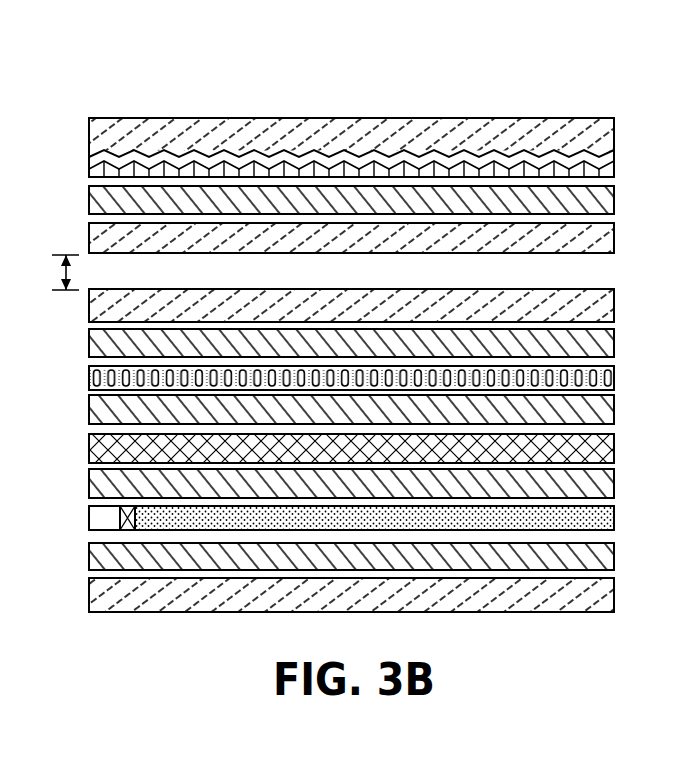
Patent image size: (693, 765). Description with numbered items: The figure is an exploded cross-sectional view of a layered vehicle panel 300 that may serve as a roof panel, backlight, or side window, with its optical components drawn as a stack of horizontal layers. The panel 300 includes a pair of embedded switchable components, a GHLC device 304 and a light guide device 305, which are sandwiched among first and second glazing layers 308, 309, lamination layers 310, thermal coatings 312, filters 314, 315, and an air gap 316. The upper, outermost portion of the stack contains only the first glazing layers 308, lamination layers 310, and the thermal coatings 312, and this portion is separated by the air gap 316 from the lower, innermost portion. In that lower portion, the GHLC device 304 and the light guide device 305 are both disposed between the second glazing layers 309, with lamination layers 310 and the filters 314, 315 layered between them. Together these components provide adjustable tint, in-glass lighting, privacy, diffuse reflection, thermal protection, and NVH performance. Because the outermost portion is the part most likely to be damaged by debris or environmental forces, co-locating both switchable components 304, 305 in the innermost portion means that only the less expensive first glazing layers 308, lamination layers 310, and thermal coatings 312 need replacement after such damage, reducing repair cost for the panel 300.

The panel 300 is at (100, 93).
The GHLC device 304 is at (614, 372).
The light guide device 305 is at (360, 525).
The first glazing layers 308 is at (614, 139).
The second glazing layers 309 is at (614, 296).
The lamination layers 310 is at (614, 199).
The thermal coatings 312 is at (614, 169).
The filter 314 is at (119, 513).
The filter 315 is at (614, 441).
The air gap 316 is at (62, 254).